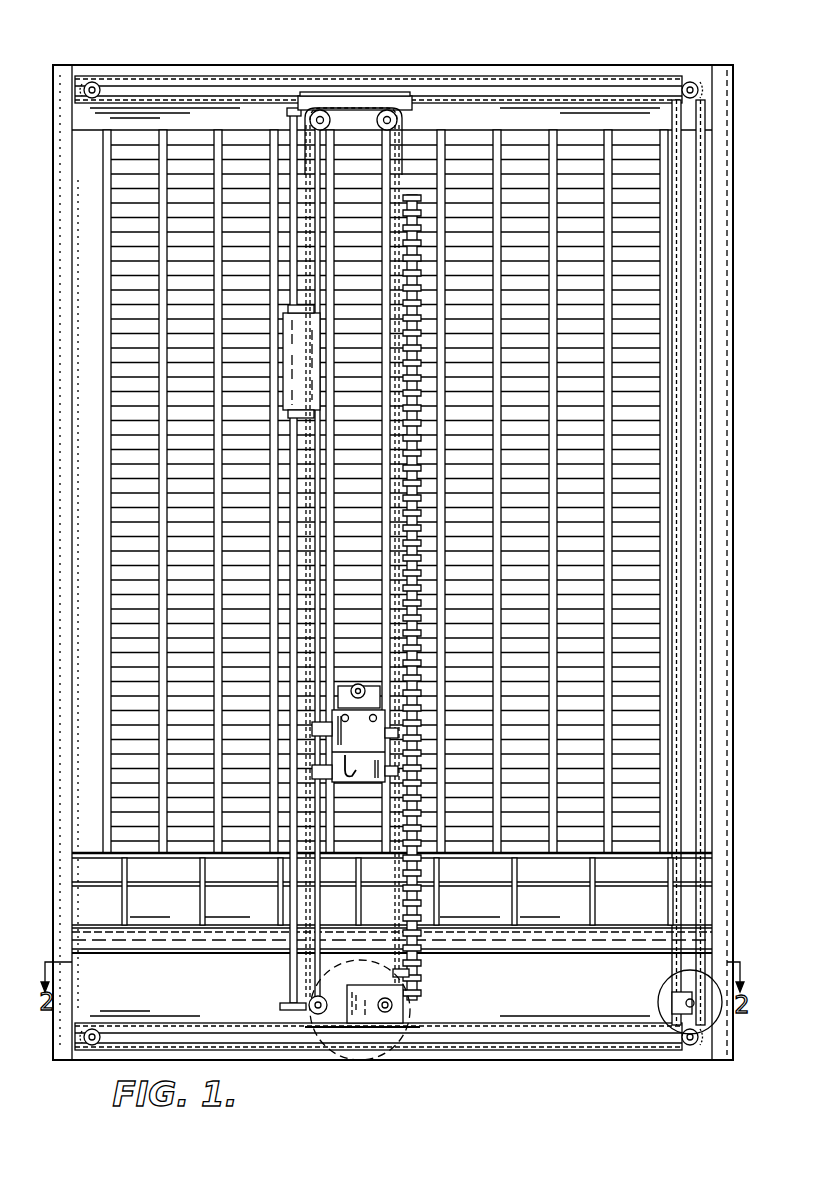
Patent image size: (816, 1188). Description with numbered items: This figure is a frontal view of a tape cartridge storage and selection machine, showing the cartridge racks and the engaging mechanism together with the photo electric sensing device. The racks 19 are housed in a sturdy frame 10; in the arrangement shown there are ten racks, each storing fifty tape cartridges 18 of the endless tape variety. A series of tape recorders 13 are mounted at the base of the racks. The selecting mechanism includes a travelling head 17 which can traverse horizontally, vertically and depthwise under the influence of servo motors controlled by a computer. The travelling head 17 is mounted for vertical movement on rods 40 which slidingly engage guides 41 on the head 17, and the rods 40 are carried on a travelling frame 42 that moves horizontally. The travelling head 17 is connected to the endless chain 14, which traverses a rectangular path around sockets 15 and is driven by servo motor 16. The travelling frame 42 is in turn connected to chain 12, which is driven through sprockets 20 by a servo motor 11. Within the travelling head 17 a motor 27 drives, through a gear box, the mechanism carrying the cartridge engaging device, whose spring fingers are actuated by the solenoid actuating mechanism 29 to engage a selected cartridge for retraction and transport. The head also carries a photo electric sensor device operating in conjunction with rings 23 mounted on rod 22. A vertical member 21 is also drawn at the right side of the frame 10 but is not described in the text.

The frame 10 is at (590, 62).
The servo motor 11 is at (666, 992).
The chain 12 is at (156, 78).
The tape recorders 13 is at (232, 905).
The endless chain 14 is at (343, 104).
The sockets 15 is at (386, 98).
The servo motor 16 is at (410, 975).
The travelling head 17 is at (365, 746).
The tape cartridges 18 is at (196, 645).
The racks 19 is at (518, 118).
The sprockets 20 is at (104, 85).
The right vertical rack 21 is at (675, 654).
The rod 22 is at (417, 122).
The rings 23 is at (440, 601).
The motor 27 is at (356, 772).
The solenoid actuating mechanism 29 is at (358, 684).
The rods 40 is at (320, 143).
The guides 41 is at (318, 771).
The travelling frame 42 is at (363, 1025).